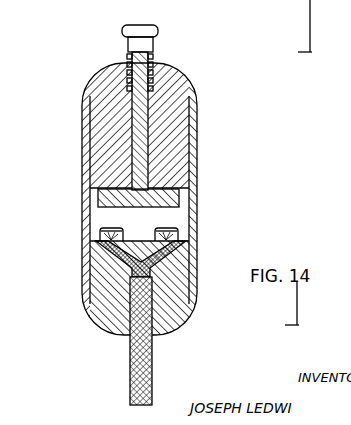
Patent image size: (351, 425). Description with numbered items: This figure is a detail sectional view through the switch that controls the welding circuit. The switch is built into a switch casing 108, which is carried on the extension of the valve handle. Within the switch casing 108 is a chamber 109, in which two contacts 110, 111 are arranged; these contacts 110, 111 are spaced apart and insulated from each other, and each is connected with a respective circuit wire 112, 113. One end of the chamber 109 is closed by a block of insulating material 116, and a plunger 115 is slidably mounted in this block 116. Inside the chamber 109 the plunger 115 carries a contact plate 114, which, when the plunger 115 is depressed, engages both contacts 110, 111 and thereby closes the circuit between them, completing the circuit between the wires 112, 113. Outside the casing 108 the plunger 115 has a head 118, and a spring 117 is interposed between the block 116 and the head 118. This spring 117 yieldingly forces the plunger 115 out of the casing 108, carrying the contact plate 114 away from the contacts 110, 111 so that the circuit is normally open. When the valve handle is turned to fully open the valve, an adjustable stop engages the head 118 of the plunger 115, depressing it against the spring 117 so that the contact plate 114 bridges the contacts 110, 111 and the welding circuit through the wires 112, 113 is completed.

The switch casing 108 is at (179, 193).
The chamber 109 is at (153, 220).
The contact 110 is at (100, 235).
The contact 111 is at (178, 235).
The circuit wire 112 is at (85, 290).
The circuit wire 113 is at (173, 267).
The contact plate 114 is at (178, 182).
The plunger 115 is at (139, 133).
The block of insulating material 116 is at (190, 80).
The spring 117 is at (153, 62).
The head 118 is at (135, 32).